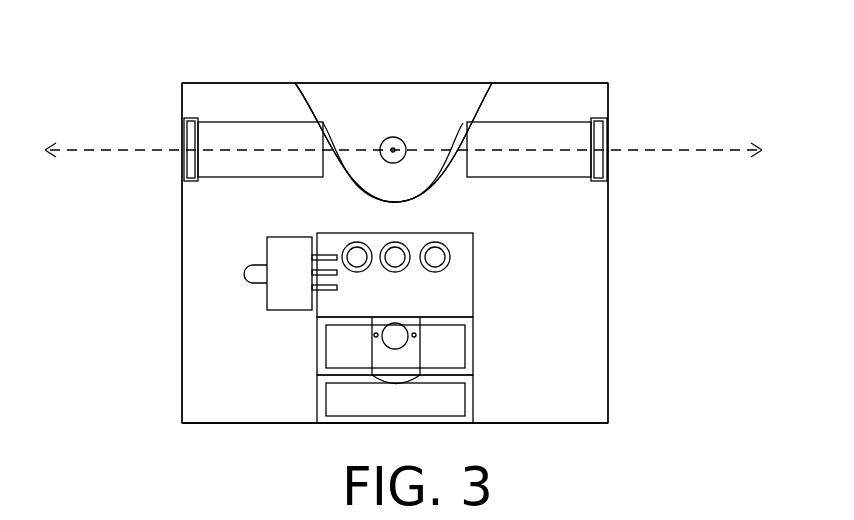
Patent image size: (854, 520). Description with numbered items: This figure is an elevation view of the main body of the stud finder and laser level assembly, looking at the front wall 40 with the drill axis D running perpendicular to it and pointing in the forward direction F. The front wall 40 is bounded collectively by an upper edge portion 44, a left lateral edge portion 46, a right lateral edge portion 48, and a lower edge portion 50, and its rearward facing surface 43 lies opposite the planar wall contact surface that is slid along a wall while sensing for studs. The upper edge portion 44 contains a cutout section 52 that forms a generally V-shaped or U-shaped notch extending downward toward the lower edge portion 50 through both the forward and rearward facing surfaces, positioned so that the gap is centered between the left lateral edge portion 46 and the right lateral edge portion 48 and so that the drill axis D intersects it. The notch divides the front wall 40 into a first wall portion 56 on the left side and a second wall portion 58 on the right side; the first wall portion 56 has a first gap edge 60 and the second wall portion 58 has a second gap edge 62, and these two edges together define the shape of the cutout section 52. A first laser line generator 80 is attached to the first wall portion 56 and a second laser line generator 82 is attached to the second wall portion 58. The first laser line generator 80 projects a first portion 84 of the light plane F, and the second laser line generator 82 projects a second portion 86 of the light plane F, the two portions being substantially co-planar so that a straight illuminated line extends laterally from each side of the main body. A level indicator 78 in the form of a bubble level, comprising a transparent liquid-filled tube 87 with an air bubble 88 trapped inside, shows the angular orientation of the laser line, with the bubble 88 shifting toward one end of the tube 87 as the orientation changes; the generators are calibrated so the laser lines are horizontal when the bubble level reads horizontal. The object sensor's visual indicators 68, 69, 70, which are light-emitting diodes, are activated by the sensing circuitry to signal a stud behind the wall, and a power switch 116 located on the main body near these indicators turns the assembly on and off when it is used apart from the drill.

The front wall 40 is at (197, 202).
The rearward facing surface 43 is at (212, 379).
The upper edge portion 44 is at (220, 83).
The left lateral edge portion 46 is at (180, 288).
The right lateral edge portion 48 is at (608, 268).
The lower edge portion 50 is at (537, 423).
The cutout section 52 is at (413, 116).
The first wall portion 56 is at (272, 97).
The second wall portion 58 is at (592, 102).
The first gap edge 60 is at (363, 168).
The second gap edge 62 is at (427, 168).
The visual indicator 68 is at (357, 272).
The visual indicator 69 is at (395, 272).
The visual indicator 70 is at (435, 272).
The level indicator 78 is at (458, 339).
The first laser line generator 80 is at (217, 140).
The second laser line generator 82 is at (520, 132).
The first portion of the light plane 84 is at (125, 152).
The second portion of the light plane 86 is at (646, 150).
The tube 87 is at (447, 359).
The air bubble 88 is at (398, 333).
The power switch 116 is at (255, 275).
The drill axis D is at (386, 141).
The light plane F is at (683, 150).